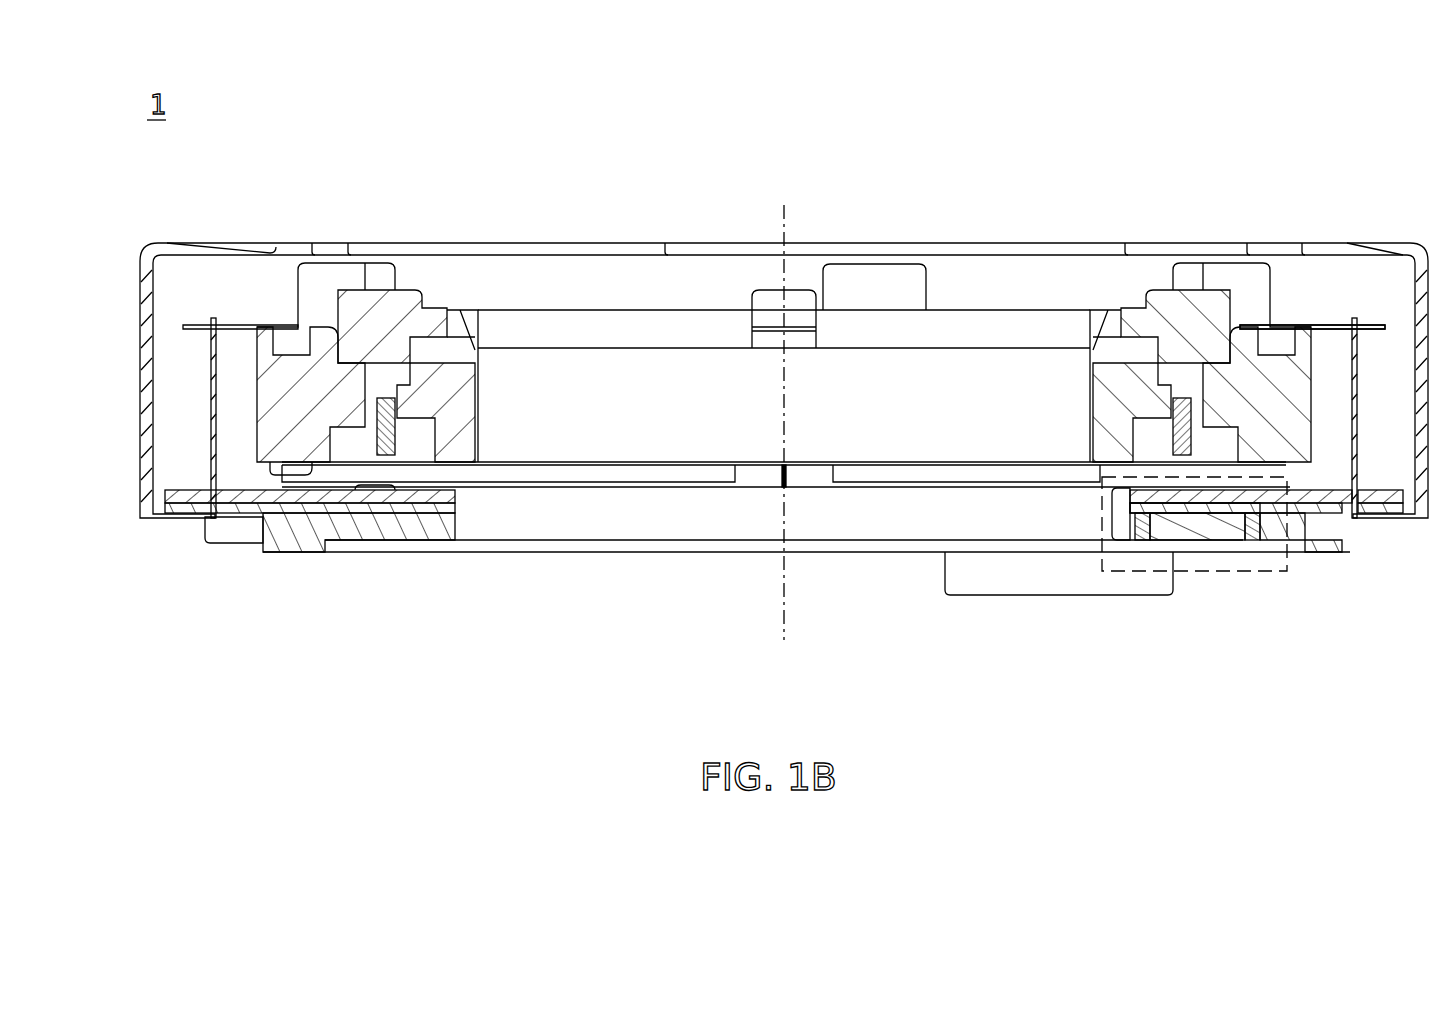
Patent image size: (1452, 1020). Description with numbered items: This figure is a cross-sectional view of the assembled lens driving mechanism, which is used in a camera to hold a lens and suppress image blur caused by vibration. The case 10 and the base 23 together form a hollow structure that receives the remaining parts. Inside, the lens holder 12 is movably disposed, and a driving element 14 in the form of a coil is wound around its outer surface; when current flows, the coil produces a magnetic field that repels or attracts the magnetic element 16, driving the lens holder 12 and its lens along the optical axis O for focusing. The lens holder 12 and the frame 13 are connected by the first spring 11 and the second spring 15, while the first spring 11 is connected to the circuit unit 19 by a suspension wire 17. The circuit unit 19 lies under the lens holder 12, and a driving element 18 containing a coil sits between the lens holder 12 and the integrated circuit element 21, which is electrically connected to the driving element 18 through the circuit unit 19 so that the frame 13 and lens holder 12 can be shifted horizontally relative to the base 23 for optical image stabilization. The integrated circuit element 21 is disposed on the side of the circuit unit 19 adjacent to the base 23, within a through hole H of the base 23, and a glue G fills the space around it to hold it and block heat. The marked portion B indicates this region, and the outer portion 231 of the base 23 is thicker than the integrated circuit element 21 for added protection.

The case 10 is at (153, 240).
The first spring 11 is at (1382, 323).
The lens holder 12 is at (380, 330).
The frame 13 is at (303, 397).
The driving element 14 is at (437, 423).
The second spring 15 is at (323, 470).
The magnetic element 16 is at (598, 473).
The suspension wire 17 is at (212, 316).
The driving element 18 is at (192, 497).
The circuit unit 19 is at (245, 507).
The integrated circuit element 21 is at (1210, 527).
The base 23 is at (383, 527).
The outer portion 231 is at (1273, 533).
The marked portion B is at (1113, 572).
The glue G is at (1145, 517).
The through hole H is at (1238, 528).
The optical axis O is at (781, 407).